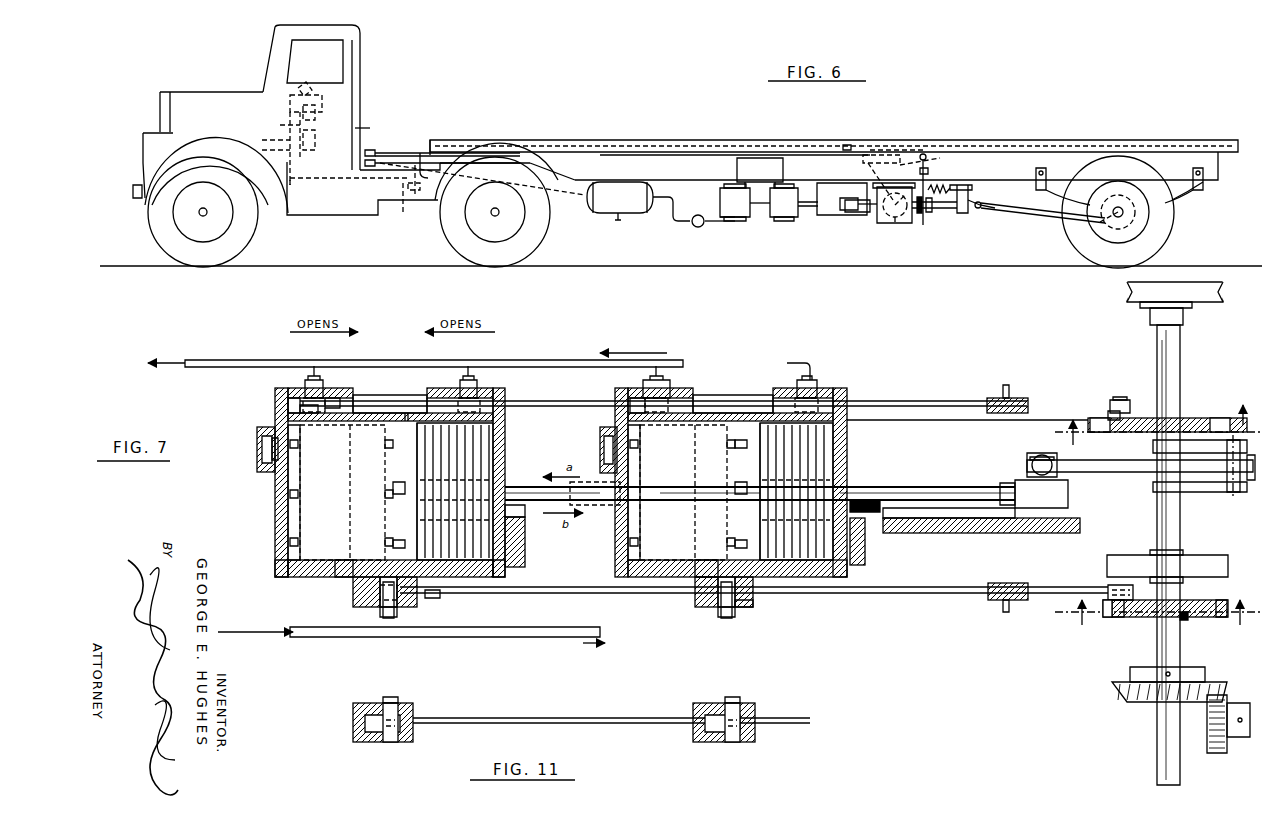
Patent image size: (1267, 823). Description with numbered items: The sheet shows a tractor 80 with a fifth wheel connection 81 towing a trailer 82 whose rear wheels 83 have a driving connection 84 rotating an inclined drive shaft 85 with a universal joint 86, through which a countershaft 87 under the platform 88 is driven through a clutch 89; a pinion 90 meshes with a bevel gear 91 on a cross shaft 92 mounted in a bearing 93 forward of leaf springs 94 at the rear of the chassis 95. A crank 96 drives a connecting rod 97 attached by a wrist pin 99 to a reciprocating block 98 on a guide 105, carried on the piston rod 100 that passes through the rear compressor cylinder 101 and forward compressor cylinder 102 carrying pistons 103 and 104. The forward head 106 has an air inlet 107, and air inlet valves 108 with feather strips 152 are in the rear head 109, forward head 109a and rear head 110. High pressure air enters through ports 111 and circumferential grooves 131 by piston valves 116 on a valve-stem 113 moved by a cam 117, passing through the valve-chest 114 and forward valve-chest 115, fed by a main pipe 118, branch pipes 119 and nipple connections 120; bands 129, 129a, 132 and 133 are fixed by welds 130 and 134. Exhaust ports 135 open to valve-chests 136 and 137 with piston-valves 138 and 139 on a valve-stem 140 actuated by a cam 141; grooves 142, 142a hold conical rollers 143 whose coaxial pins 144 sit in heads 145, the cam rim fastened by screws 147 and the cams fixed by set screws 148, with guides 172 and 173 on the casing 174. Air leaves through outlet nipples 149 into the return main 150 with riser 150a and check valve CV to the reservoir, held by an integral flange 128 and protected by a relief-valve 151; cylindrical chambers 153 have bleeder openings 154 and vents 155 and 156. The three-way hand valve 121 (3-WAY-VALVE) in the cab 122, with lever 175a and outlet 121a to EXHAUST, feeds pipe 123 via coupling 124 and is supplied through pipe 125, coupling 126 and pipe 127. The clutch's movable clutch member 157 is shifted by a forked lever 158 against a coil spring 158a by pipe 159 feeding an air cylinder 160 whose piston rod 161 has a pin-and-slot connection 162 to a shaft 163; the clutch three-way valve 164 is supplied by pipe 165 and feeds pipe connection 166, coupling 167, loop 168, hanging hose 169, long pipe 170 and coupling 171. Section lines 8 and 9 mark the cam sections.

In FIG. 6, the tractor 80 is at (366, 203).
In FIG. 6, the fifth wheel connection 81 is at (447, 159).
In FIG. 6, the trailer 82 is at (900, 145).
In FIG. 6, the rear wheels 83 is at (1170, 223).
In FIG. 6, the driving connection 84 is at (1108, 216).
In FIG. 6, the inclined drive shaft 85 is at (1035, 212).
In FIG. 6, the universal joint 86 is at (982, 205).
In FIG. 6, the countershaft 87 is at (962, 214).
In FIG. 7, the countershaft 87 is at (1245, 703).
In FIG. 6, the platform 88 is at (1028, 147).
In FIG. 6, the clutch 89 is at (921, 214).
In FIG. 6, the pinion 90 is at (893, 223).
In FIG. 7, the pinion 90 is at (1216, 754).
In FIG. 6, the bevel gear 91 is at (905, 223).
In FIG. 7, the bevel gear 91 is at (1128, 695).
In FIG. 6, the cross shaft 92 is at (880, 216).
In FIG. 7, the cross shaft 92 is at (1162, 520).
In FIG. 7, the bearing 93 is at (1185, 313).
In FIG. 6, the leaf springs 94 is at (1198, 192).
In FIG. 6, the chassis 95 is at (1185, 160).
In FIG. 7, the crank 96 is at (1205, 487).
In FIG. 6, the connecting rod 97 is at (875, 181).
In FIG. 7, the connecting rod 97 is at (1120, 473).
In FIG. 6, the reciprocating block 98 is at (848, 212).
In FIG. 7, the reciprocating block 98 is at (1034, 494).
In FIG. 7, the wrist pin 99 is at (1028, 458).
In FIG. 6, the piston rod 100 is at (808, 208).
In FIG. 7, the piston rod 100 is at (905, 495).
In FIG. 6, the rear compressor cylinder 101 is at (782, 190).
In FIG. 7, the rear compressor cylinder 101 is at (765, 580).
In FIG. 6, the forward compressor cylinder 102 is at (735, 218).
In FIG. 7, the forward compressor cylinder 102 is at (338, 578).
In FIG. 7, the piston 103 is at (820, 470).
In FIG. 7, the piston 104 is at (478, 460).
In FIG. 6, the guide 105 is at (840, 182).
In FIG. 7, the guide 105 is at (990, 533).
In FIG. 7, the forward head 106 is at (280, 498).
In FIG. 7, the air inlet 107 is at (262, 465).
In FIG. 7, the air inlet valves 108 is at (525, 520).
In FIG. 7, the rear head 109 is at (492, 433).
In FIG. 7, the forward head 109a is at (630, 528).
In FIG. 7, the rear head 110 is at (847, 440).
In FIG. 7, the ports 111 is at (395, 415).
In FIG. 11, the ports 111 is at (395, 702).
In FIG. 6, the valve-stem 113 is at (852, 214).
In FIG. 7, the valve-stem 113 is at (612, 596).
In FIG. 11, the valve-stem 113 is at (500, 720).
In FIG. 7, the valve-chest 114 is at (750, 608).
In FIG. 7, the forward valve-chest 115 is at (417, 602).
In FIG. 11, the forward valve-chest 115 is at (413, 735).
In FIG. 7, the piston valves 116 is at (375, 610).
In FIG. 11, the piston valves 116 is at (750, 742).
In FIG. 7, the cam 117 is at (1108, 618).
In FIG. 6, the main pipe 118 is at (628, 157).
In FIG. 7, the main pipe 118 is at (485, 638).
In FIG. 6, the branch pipes 119 is at (736, 166).
In FIG. 7, the nipple connections 120 is at (393, 620).
In FIG. 6, the 3-way hand valve 121 is at (288, 104).
In FIG. 6, the outlet 121a is at (324, 112).
In FIG. 6, the cab 122 is at (345, 104).
In FIG. 6, the pipe 123 is at (321, 140).
In FIG. 6, the coupling 124 is at (377, 153).
In FIG. 6, the pipe 125 is at (482, 179).
In FIG. 6, the coupling 126 is at (382, 180).
In FIG. 6, the pipe 127 is at (280, 127).
In FIG. 6, the integral flange 128 is at (600, 183).
In FIG. 7, the band 129 is at (365, 395).
In FIG. 7, the band 129a is at (710, 412).
In FIG. 7, the welds 130 is at (410, 412).
In FIG. 7, the circumferential grooves 131 is at (388, 525).
In FIG. 7, the band 132 is at (503, 578).
In FIG. 7, the band 133 is at (300, 578).
In FIG. 7, the welds 134 is at (357, 578).
In FIG. 7, the exhaust ports 135 is at (298, 448).
In FIG. 7, the valve-chests 136 is at (485, 400).
In FIG. 7, the valve-chests 137 is at (273, 392).
In FIG. 7, the piston-valves 138 is at (475, 398).
In FIG. 7, the piston-valves 139 is at (322, 398).
In FIG. 7, the valve-stem 140 is at (955, 420).
In FIG. 7, the cam 141 is at (1190, 417).
In FIG. 7, the machined groove 142 is at (1215, 605).
In FIG. 7, the machined groove 142a is at (1220, 417).
In FIG. 7, the conical rollers 143 is at (1115, 432).
In FIG. 7, the coaxial pins 144 is at (1118, 399).
In FIG. 7, the heads 145 is at (1106, 592).
In FIG. 7, the screws 147 is at (1090, 420).
In FIG. 7, the set screws 148 is at (1185, 621).
In FIG. 7, the outlet nipples 149 is at (313, 376).
In FIG. 6, the return main 150 is at (676, 221).
In FIG. 7, the return main 150 is at (248, 360).
In FIG. 6, the riser 150a is at (684, 215).
In FIG. 6, the relief-valve 151 is at (615, 220).
In FIG. 7, the feather strips 152 is at (266, 442).
In FIG. 7, the cylindrical chambers 153 is at (290, 408).
In FIG. 11, the cylindrical chambers 153 is at (380, 740).
In FIG. 7, the bleeder openings 154 is at (348, 388).
In FIG. 7, the vents 155 is at (790, 385).
In FIG. 7, the vents 156 is at (695, 595).
In FIG. 6, the movable clutch member 157 is at (931, 213).
In FIG. 6, the forked lever 158 is at (942, 187).
In FIG. 6, the coil spring 158a is at (970, 200).
In FIG. 6, the pipe 159 is at (868, 150).
In FIG. 6, the air cylinder 160 is at (884, 167).
In FIG. 6, the piston rod 161 is at (925, 158).
In FIG. 6, the pin-and-slot connection 162 is at (926, 156).
In FIG. 6, the shaft 163 is at (930, 171).
In FIG. 6, the 3-way valve 164 is at (265, 158).
In FIG. 6, the pipe 165 is at (260, 147).
In FIG. 6, the pipe connection 166 is at (342, 182).
In FIG. 6, the coupling 167 is at (402, 206).
In FIG. 6, the loop 168 is at (416, 198).
In FIG. 6, the hanging hose 169 is at (420, 152).
In FIG. 6, the long pipe 170 is at (515, 142).
In FIG. 6, the coupling 171 is at (848, 144).
In FIG. 7, the guide 172 is at (1015, 584).
In FIG. 7, the guide 173 is at (1018, 398).
In FIG. 6, the casing 174 is at (903, 225).
In FIG. 7, the casing 174 is at (1125, 293).
In FIG. 6, the valve lever 175a is at (308, 92).
In FIG. 7, the section line 8 is at (1158, 618).
In FIG. 7, the section line 9 is at (1158, 426).
In FIG. 6, the check valve CV is at (704, 229).
In FIG. 6, the exhaust port EXHAUST is at (390, 128).
In FIG. 6, the 3-way hand valve 3-WAY-VALVE is at (312, 95).